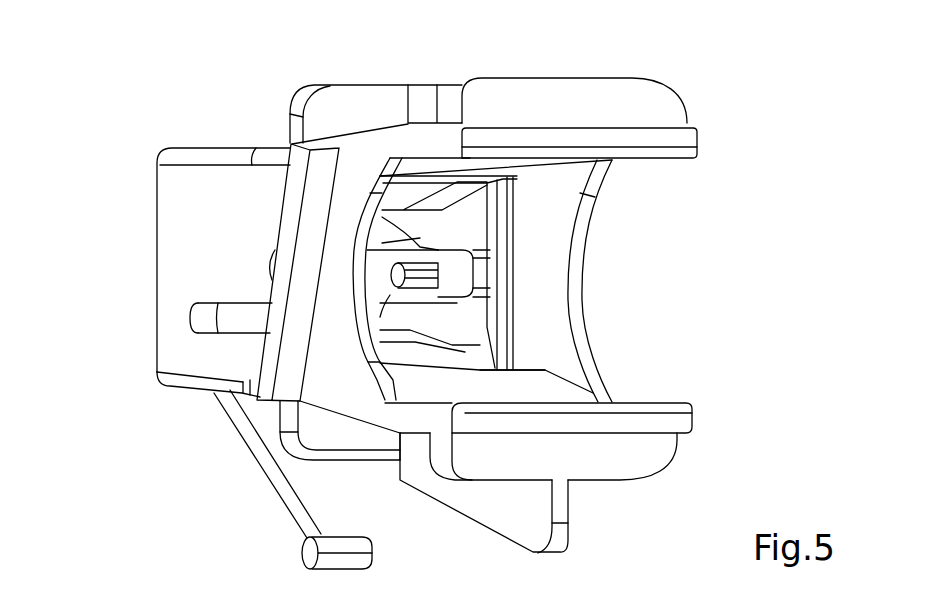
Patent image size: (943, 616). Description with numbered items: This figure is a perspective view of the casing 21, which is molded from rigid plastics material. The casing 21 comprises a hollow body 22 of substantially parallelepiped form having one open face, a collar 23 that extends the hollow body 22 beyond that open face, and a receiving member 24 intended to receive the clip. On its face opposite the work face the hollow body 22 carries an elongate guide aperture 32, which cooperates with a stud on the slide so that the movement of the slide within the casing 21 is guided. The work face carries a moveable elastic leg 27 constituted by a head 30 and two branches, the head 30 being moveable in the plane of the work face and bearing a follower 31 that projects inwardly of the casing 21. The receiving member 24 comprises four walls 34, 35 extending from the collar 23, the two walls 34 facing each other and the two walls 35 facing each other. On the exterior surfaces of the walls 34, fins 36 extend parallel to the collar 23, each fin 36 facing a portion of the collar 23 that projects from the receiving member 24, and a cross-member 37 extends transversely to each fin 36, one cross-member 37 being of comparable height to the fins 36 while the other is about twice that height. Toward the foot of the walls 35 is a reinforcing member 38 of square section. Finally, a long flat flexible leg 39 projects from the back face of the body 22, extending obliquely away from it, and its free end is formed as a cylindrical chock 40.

The casing 21 is at (197, 487).
The hollow body 22 is at (160, 137).
The collar 23 is at (330, 115).
The receiving member 24 is at (717, 143).
The elastic leg 27 is at (482, 273).
The head 30 is at (455, 288).
The follower 31 is at (417, 270).
The guide aperture 32 is at (238, 312).
The walls 34 is at (428, 138).
The walls 35 is at (558, 213).
The fins 36 is at (625, 103).
The cross-member 37 is at (423, 117).
The reinforcing member 38 is at (293, 193).
The flexible leg 39 is at (253, 412).
The cylindrical chock 40 is at (310, 553).